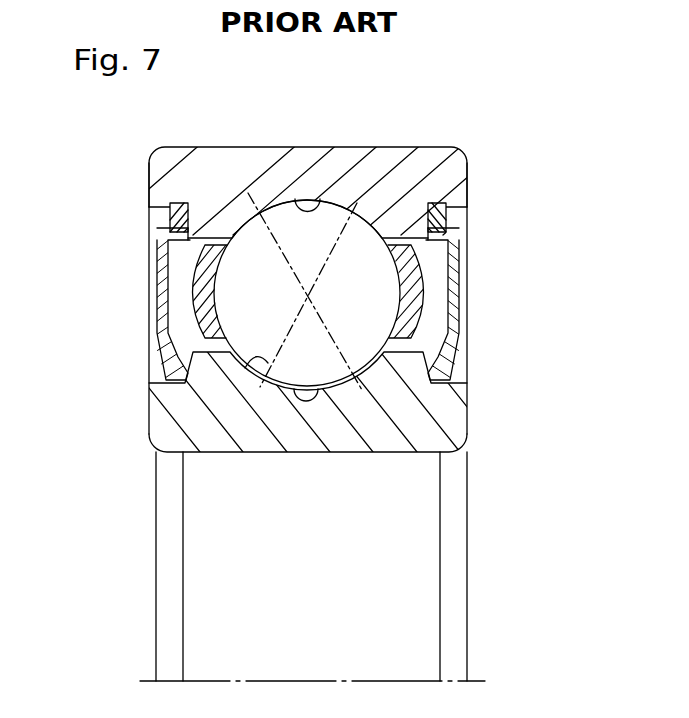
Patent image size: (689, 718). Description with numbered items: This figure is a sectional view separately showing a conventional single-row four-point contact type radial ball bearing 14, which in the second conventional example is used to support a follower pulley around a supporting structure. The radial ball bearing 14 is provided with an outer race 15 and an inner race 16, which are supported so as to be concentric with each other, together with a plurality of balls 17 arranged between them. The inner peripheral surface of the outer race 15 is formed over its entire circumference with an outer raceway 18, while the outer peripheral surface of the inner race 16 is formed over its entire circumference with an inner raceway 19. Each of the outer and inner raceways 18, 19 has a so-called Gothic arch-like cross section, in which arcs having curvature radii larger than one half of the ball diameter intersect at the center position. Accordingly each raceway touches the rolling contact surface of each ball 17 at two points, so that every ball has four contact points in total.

The radial ball bearing 14 is at (428, 137).
The outer race 15 is at (223, 186).
The inner race 16 is at (168, 425).
The balls 17 is at (375, 291).
The outer raceway 18 is at (294, 200).
The inner raceway 19 is at (268, 360).